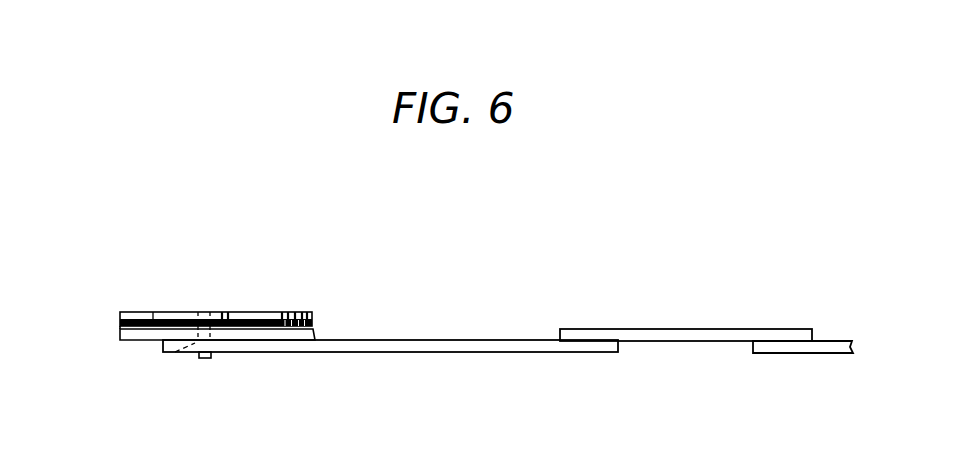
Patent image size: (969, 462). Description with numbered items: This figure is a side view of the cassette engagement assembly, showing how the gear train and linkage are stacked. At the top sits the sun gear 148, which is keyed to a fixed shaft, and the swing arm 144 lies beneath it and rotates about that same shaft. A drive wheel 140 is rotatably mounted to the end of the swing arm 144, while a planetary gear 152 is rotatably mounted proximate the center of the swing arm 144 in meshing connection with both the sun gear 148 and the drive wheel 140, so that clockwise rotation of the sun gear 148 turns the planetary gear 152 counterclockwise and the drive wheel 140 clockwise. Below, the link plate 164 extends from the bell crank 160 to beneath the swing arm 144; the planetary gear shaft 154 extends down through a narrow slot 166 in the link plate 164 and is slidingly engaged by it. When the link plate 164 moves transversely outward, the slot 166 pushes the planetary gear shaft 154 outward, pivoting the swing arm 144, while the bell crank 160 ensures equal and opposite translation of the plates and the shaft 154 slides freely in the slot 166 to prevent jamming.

The drive wheel 140 is at (307, 313).
The swing arm 144 is at (313, 331).
The sun gear 148 is at (120, 313).
The planetary gear 152 is at (188, 313).
The planetary gear shaft 154 is at (205, 358).
The bell crank 160 is at (652, 330).
The link plate 164 is at (427, 353).
The slot 166 is at (190, 344).